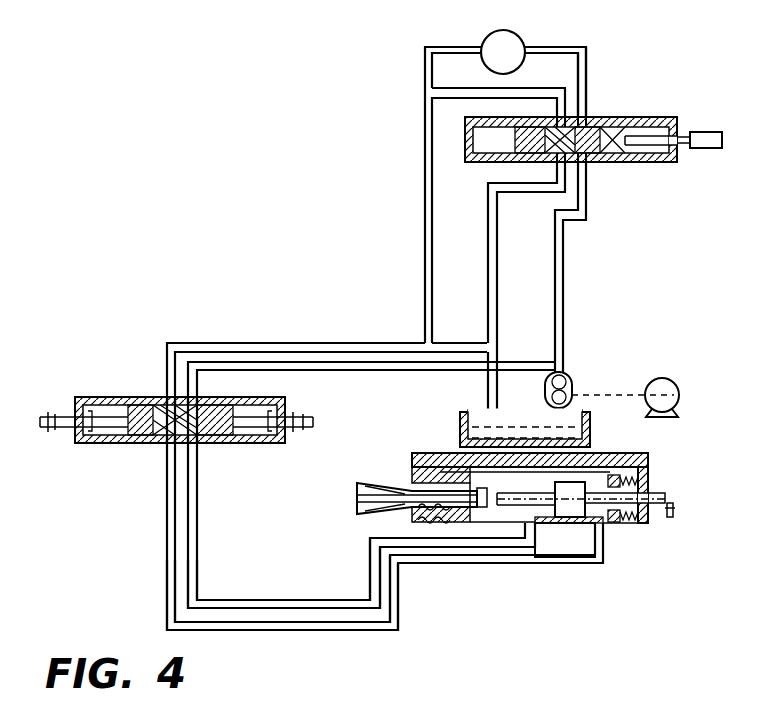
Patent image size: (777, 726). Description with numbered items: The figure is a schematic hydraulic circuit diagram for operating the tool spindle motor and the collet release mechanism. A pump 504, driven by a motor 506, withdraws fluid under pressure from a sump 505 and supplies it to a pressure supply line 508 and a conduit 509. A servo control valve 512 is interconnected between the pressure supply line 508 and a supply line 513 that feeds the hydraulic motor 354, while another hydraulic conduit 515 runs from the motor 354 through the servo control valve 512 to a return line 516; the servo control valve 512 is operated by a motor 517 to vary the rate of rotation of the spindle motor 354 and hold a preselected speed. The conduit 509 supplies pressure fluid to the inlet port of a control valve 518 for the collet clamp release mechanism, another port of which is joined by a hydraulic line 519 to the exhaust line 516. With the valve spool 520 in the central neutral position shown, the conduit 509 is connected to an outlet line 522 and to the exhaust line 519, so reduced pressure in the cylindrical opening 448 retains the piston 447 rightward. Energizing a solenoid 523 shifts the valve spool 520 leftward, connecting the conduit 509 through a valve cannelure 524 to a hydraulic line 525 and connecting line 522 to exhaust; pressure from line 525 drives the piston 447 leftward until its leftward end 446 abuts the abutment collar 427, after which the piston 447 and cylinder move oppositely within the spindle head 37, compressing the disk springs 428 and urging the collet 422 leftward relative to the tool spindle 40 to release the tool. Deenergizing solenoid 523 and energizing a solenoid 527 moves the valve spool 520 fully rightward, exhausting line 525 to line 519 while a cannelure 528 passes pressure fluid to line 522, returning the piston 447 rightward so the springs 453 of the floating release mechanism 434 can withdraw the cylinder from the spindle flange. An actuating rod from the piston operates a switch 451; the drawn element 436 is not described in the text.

The spindle head 37 is at (425, 455).
The tool spindle 40 is at (397, 509).
The hydraulic motor 354 is at (513, 45).
The collet 422 is at (357, 497).
The abutment collar 427 is at (462, 452).
The disk springs 428 is at (480, 510).
The release mechanism 434 is at (546, 524).
The seal 436 is at (425, 524).
The leftward end of piston 446 is at (510, 520).
The piston 447 is at (575, 490).
The cylindrical opening 448 is at (650, 497).
The switch 451 is at (674, 510).
The springs 453 is at (626, 520).
The pump 504 is at (571, 386).
The sump 505 is at (590, 427).
The motor 506 is at (690, 376).
The pressure supply line 508 is at (564, 243).
The conduit 509 is at (287, 366).
The servo control valve 512 is at (603, 104).
The supply line 513 is at (588, 58).
The hydraulic conduit 515 is at (425, 72).
The return line 516 is at (488, 216).
The motor 517 is at (715, 123).
The control valve 518 is at (150, 454).
The hydraulic line 519 is at (272, 345).
The valve spool 520 is at (153, 404).
The outlet line 522 is at (257, 601).
The solenoid 523 is at (310, 418).
The valve cannelure 524 is at (198, 447).
The hydraulic line 525 is at (167, 606).
The solenoid 527 is at (55, 430).
The cannelure 528 is at (163, 397).